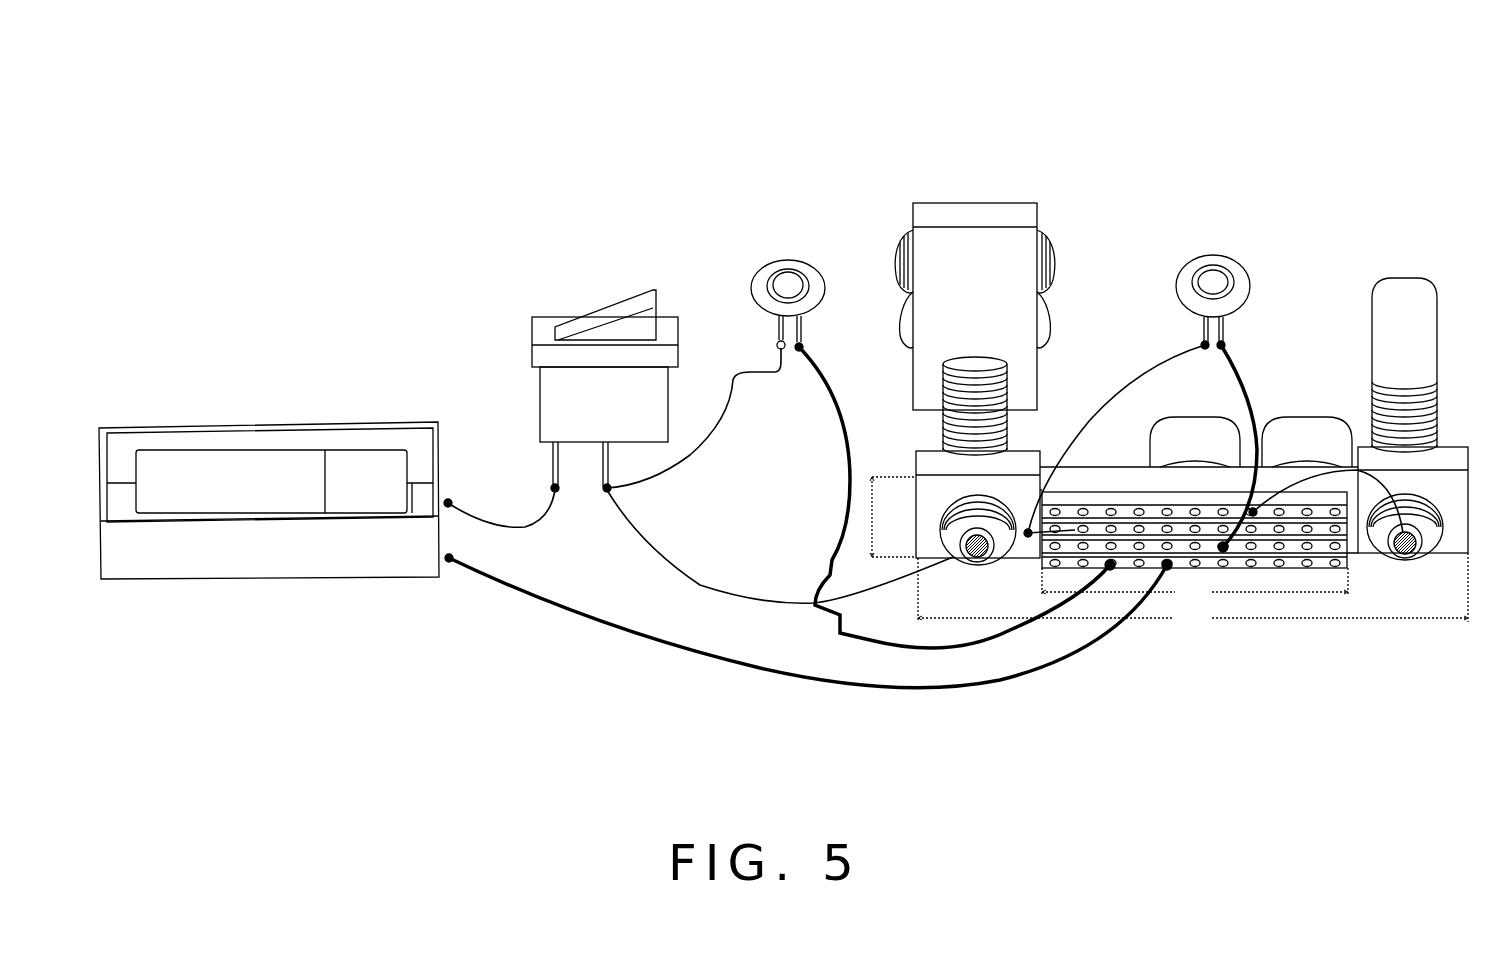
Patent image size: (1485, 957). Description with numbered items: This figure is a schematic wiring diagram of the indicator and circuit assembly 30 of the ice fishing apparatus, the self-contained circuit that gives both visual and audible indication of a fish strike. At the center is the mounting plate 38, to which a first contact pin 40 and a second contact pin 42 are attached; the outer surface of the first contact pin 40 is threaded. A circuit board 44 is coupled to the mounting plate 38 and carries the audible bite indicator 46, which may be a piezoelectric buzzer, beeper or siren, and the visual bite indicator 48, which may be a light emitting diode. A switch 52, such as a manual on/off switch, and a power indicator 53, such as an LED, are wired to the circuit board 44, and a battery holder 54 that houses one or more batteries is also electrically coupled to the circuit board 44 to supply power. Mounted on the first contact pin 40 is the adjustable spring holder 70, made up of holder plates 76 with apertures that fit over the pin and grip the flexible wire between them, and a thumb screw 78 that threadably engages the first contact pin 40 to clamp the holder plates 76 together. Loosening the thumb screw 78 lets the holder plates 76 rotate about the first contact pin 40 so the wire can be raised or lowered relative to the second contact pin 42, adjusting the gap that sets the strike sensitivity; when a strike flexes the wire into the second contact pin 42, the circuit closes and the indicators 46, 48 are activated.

The indicator and circuit assembly 30 is at (1160, 88).
The mounting plate 38 is at (1093, 485).
The first contact pin 40 is at (943, 422).
The second contact pin 42 is at (1403, 288).
The circuit board 44 is at (1272, 540).
The audible bite indicator 46 is at (1198, 417).
The visual bite indicator 48 is at (1235, 257).
The switch 52 is at (555, 312).
The power indicator 53 is at (775, 252).
The battery holder 54 is at (312, 426).
The adjustable spring holder 70 is at (906, 162).
The holder plates 76 is at (968, 217).
The thumb screw 78 is at (1057, 260).